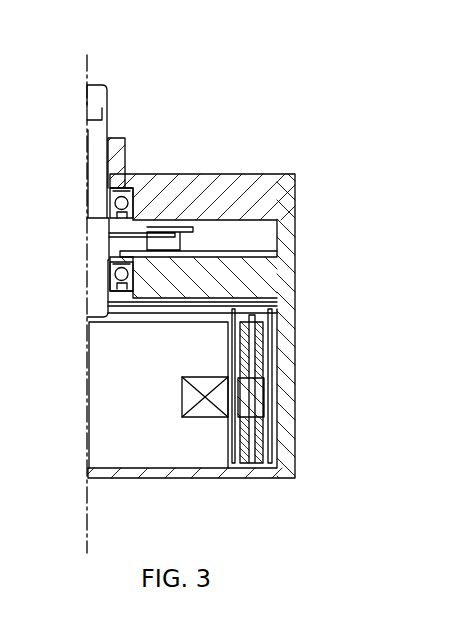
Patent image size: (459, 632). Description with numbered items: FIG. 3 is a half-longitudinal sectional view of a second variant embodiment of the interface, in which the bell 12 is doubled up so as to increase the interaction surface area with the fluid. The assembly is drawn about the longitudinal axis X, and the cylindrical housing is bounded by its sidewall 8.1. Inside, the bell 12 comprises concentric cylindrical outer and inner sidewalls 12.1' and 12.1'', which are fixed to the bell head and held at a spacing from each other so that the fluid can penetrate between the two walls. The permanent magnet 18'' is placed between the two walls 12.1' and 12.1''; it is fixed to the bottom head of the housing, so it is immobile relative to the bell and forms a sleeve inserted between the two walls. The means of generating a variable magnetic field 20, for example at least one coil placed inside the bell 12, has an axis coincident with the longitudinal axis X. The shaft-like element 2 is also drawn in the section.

The longitudinal axis X is at (87, 73).
The shaft / hub 2 is at (98, 128).
The sidewall 8.1 is at (290, 320).
The bell 12 is at (242, 296).
The permanent magnet 18'' is at (302, 389).
The outer sidewall 12.1' is at (325, 402).
The inner sidewall 12.1'' is at (288, 427).
The means of generating a variable magnetic field 20 is at (198, 412).